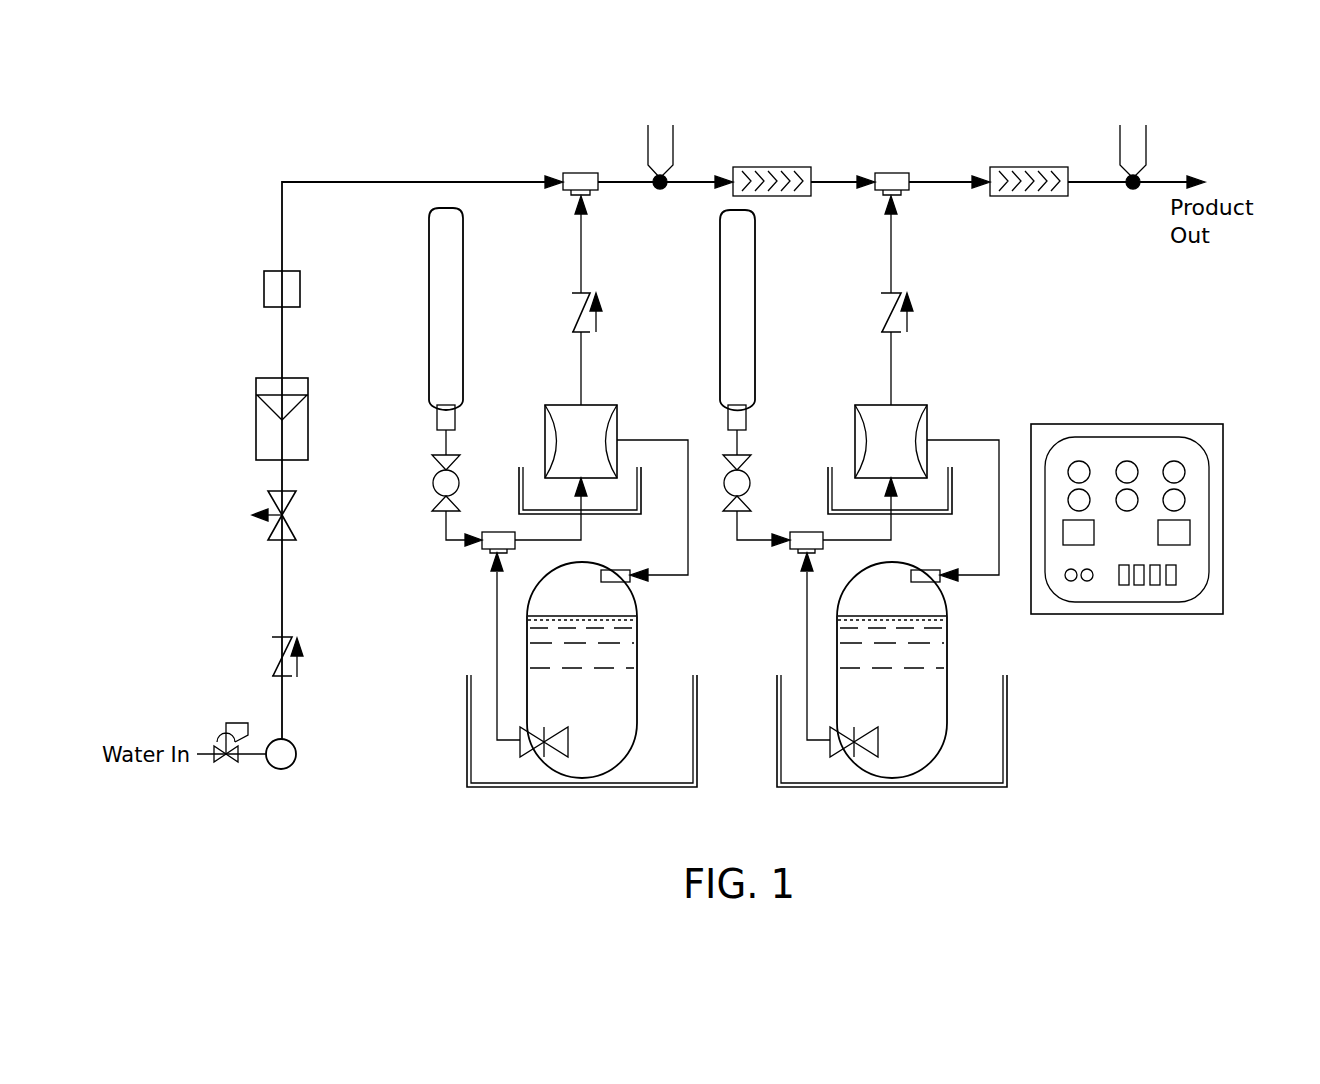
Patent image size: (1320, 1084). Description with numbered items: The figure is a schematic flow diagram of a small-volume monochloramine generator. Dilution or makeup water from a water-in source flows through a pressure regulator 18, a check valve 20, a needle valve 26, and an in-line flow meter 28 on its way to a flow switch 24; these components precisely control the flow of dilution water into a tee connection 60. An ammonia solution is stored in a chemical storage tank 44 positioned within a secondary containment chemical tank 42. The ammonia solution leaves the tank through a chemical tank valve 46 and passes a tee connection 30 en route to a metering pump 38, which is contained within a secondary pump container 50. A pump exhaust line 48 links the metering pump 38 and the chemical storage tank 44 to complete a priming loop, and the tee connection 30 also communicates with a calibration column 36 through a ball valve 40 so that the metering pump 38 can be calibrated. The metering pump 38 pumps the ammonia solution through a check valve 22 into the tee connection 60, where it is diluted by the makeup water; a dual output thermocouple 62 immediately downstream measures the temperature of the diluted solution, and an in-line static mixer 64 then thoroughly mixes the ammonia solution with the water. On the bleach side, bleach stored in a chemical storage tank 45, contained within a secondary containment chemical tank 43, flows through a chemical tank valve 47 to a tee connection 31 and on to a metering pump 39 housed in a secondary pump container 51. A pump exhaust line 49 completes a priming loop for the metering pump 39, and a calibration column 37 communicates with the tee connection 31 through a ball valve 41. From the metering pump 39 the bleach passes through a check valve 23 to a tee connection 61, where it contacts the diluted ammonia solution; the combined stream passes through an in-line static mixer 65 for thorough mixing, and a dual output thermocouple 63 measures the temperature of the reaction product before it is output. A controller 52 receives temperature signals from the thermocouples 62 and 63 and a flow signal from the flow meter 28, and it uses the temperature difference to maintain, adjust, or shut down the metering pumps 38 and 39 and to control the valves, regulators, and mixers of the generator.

The pressure regulator 18 is at (281, 770).
The check valve 20 is at (272, 660).
The check valve 22 is at (572, 312).
The check valve 23 is at (881, 310).
The flow switch 24 is at (264, 289).
The needle valve 26 is at (272, 530).
The in-line flow meter 28 is at (256, 420).
The tee connection 30 is at (485, 552).
The tee connection 31 is at (793, 552).
The calibration column 36 is at (430, 312).
The calibration column 37 is at (720, 332).
The metering pump 38 is at (545, 448).
The metering pump 39 is at (855, 415).
The ball valve 40 is at (437, 510).
The ball valve 41 is at (750, 480).
The secondary containment chemical tank 42 is at (697, 712).
The secondary containment chemical tank 43 is at (1007, 772).
The chemical storage tank 44 is at (637, 640).
The chemical storage tank 45 is at (947, 695).
The chemical tank valve 46 is at (527, 752).
The chemical tank valve 47 is at (835, 750).
The pump exhaust line 48 is at (653, 440).
The pump exhaust line 49 is at (962, 578).
The secondary pump container 50 is at (621, 515).
The secondary pump container 51 is at (930, 512).
The controller 52 is at (1223, 575).
The tee connection 60 is at (572, 173).
The tee connection 61 is at (890, 173).
The dual output thermocouple 62 is at (673, 150).
The dual output thermocouple 63 is at (1146, 150).
The in-line static mixer 64 is at (778, 167).
The in-line static mixer 65 is at (1028, 167).